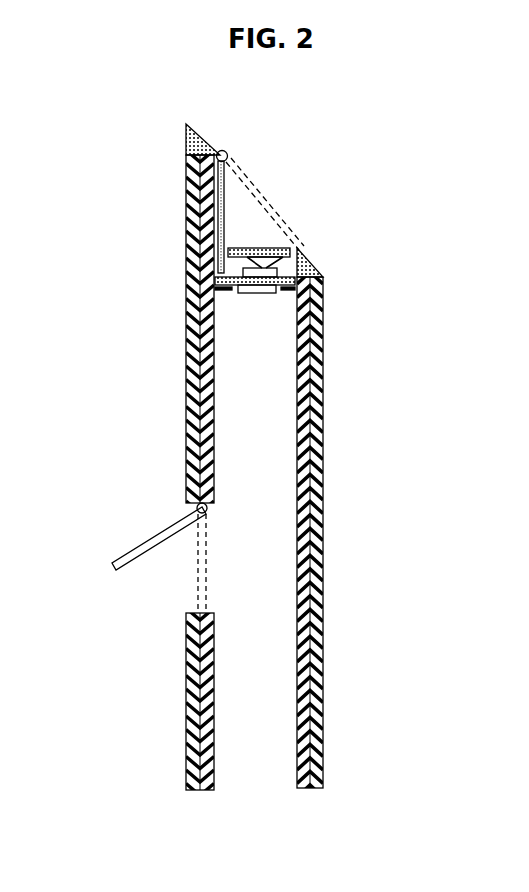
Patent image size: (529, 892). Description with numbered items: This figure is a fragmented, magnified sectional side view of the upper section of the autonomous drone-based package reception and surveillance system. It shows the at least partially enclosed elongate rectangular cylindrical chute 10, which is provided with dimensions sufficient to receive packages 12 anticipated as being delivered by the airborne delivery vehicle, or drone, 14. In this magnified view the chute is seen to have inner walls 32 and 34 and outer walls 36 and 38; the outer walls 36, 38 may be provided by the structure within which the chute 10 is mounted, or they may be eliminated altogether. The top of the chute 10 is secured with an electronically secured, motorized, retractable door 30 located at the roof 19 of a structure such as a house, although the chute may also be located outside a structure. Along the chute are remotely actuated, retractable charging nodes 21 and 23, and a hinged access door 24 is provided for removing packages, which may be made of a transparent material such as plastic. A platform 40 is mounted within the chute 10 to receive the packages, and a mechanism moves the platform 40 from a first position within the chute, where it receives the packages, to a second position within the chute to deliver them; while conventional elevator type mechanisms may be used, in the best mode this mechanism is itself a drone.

The chute 10 is at (268, 429).
The packages 12 is at (243, 273).
The airborne delivery vehicle (drone) 14 is at (266, 248).
The roof 19 is at (187, 144).
The charging node 21 is at (227, 290).
The charging node 23 is at (292, 290).
The hinged access door 24 is at (144, 540).
The retractable door 30 is at (224, 213).
The inner wall 32 is at (214, 349).
The inner wall 34 is at (297, 522).
The outer wall 36 is at (187, 408).
The outer wall 38 is at (323, 426).
The platform (drone) 40 is at (255, 291).